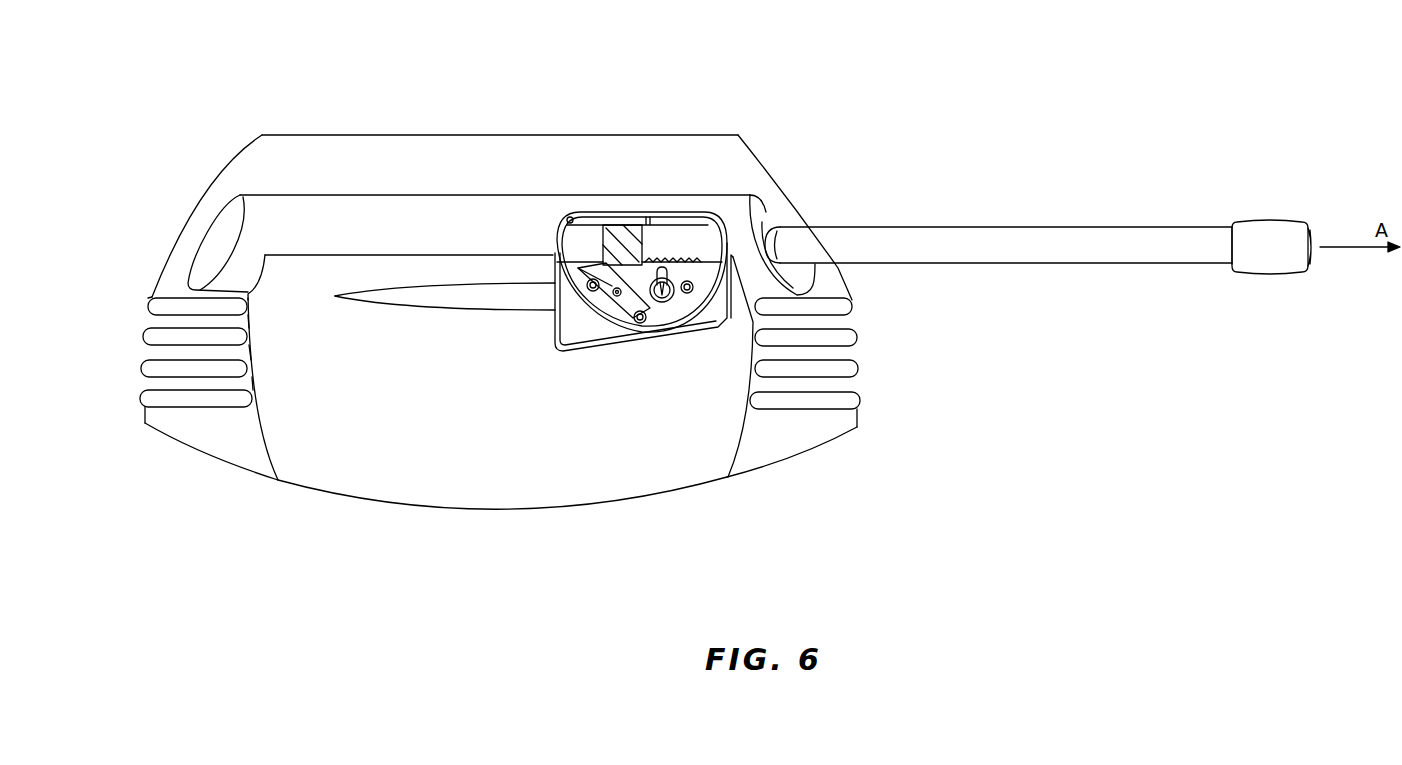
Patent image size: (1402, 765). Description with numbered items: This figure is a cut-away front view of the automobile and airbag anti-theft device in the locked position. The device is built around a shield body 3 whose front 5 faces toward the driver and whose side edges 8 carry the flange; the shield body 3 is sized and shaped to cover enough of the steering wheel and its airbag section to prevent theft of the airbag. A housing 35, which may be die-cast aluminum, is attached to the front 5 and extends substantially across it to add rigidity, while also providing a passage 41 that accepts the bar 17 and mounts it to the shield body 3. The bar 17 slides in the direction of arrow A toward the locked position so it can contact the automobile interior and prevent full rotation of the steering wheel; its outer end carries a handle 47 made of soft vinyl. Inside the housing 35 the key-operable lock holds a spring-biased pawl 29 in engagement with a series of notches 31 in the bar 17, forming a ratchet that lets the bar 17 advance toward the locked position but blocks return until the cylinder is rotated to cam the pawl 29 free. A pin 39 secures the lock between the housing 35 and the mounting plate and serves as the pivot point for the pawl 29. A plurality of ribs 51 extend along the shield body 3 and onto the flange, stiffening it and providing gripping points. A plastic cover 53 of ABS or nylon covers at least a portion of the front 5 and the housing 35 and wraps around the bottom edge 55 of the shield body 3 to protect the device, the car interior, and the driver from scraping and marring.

The shield body 3 is at (380, 128).
The front 5 is at (503, 176).
The side edges 8 is at (185, 230).
The bar 17 is at (1005, 237).
The pawl 29 is at (628, 277).
The notches 31 is at (697, 260).
The housing 35 is at (272, 205).
The pin 39 is at (616, 300).
The passage 41 is at (777, 220).
The handle 47 is at (1263, 230).
The ribs 51 is at (143, 372).
The plastic cover 53 is at (327, 468).
The bottom edge 55 is at (742, 477).